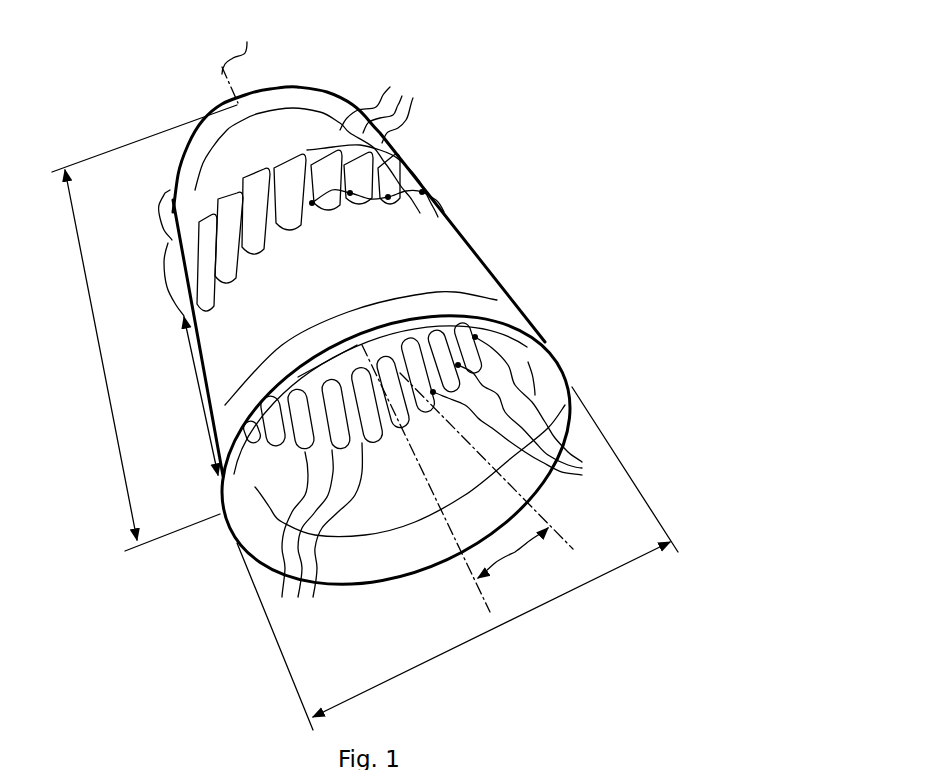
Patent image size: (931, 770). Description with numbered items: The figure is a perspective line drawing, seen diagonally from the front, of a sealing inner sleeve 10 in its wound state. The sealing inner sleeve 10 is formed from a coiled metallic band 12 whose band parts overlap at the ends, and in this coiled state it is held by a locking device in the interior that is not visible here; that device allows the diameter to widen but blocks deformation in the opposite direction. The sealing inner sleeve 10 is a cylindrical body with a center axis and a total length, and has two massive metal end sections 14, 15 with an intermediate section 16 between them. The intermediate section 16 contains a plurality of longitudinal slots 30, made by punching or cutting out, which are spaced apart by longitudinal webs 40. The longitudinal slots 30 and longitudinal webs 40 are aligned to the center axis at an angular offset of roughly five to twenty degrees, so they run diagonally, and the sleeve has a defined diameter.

The sealing inner sleeve 10 is at (552, 52).
The metallic band 12 is at (418, 242).
The end section 14 is at (158, 218).
The end section 15 is at (195, 393).
The intermediate section 16 is at (165, 280).
The longitudinal slots 30 is at (353, 349).
The longitudinal webs 40 is at (417, 177).